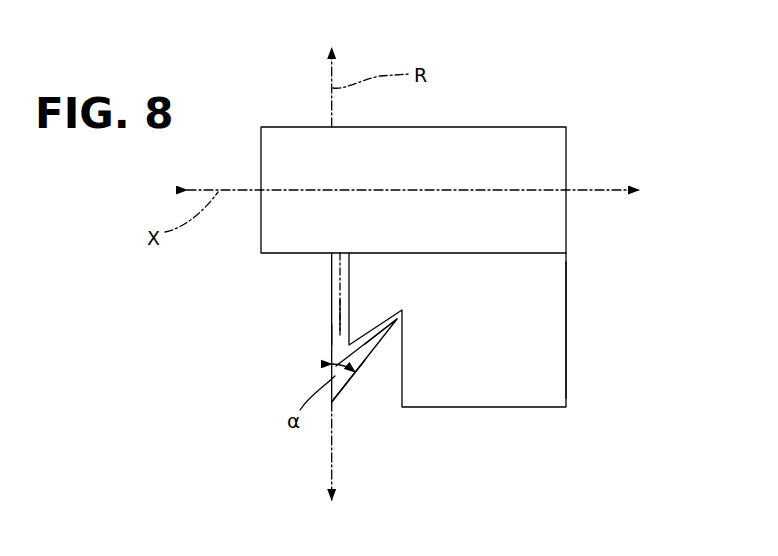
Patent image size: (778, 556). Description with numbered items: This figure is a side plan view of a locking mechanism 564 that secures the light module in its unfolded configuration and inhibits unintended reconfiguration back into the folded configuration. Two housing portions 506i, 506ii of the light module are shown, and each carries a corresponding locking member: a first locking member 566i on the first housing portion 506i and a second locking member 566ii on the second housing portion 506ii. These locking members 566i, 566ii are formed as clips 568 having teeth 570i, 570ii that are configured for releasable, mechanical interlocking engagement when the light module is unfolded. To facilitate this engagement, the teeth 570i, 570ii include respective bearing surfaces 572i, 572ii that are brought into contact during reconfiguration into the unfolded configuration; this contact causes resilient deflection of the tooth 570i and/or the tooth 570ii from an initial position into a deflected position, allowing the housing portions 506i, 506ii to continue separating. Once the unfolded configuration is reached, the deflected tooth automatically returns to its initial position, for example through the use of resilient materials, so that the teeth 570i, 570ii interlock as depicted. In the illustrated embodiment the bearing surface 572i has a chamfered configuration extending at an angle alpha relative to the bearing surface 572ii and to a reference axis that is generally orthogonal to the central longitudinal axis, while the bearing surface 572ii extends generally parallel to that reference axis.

The locking mechanism 564 is at (453, 246).
The housing portion 506i is at (278, 112).
The housing portion 506ii is at (610, 288).
The clip 568 is at (420, 298).
The tooth 570ii is at (341, 318).
The bearing surface 572ii is at (338, 333).
The first locking member 566i is at (322, 352).
The second locking member 566ii is at (575, 371).
The tooth 570i is at (362, 372).
The bearing surface 572i is at (369, 362).